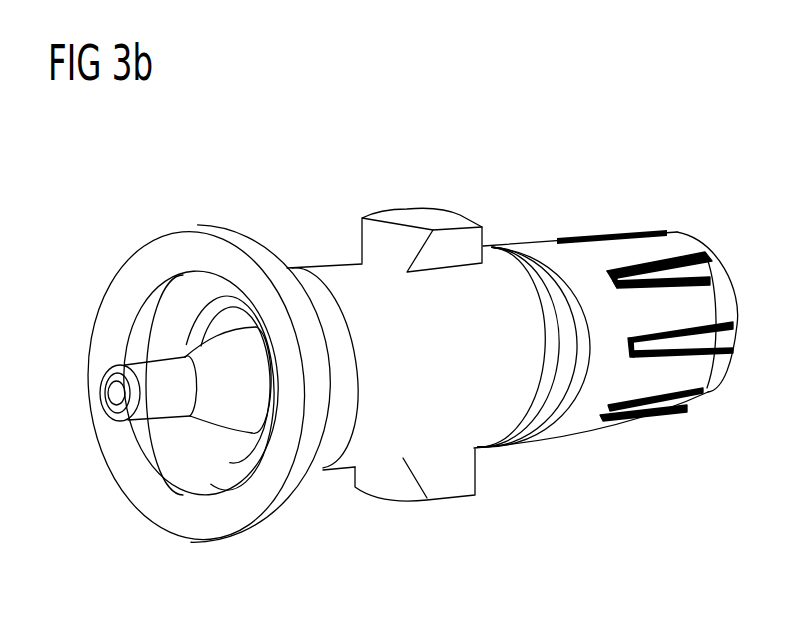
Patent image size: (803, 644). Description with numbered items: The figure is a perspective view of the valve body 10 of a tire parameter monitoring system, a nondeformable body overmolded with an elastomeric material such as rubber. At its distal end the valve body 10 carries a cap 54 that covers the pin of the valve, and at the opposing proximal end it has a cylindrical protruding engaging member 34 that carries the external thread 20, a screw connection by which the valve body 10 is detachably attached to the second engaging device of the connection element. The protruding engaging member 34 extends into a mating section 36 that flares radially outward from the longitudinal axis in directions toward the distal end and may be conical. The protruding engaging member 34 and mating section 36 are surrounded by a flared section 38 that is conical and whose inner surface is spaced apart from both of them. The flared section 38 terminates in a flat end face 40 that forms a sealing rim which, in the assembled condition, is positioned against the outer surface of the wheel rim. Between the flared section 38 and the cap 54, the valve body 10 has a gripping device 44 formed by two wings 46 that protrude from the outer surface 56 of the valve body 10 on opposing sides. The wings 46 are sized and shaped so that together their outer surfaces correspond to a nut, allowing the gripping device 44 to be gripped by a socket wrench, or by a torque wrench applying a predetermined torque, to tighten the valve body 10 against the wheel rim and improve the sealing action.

The valve body 10 is at (638, 134).
The external thread 20 is at (143, 365).
The protruding engaging member 34 is at (103, 428).
The mating section 36 is at (231, 407).
The flared section 38 is at (293, 260).
The flat end face 40 is at (138, 268).
The gripping device 44 is at (458, 182).
The wings 46 is at (472, 237).
The cap 54 is at (664, 247).
The outer surface 56 is at (326, 266).